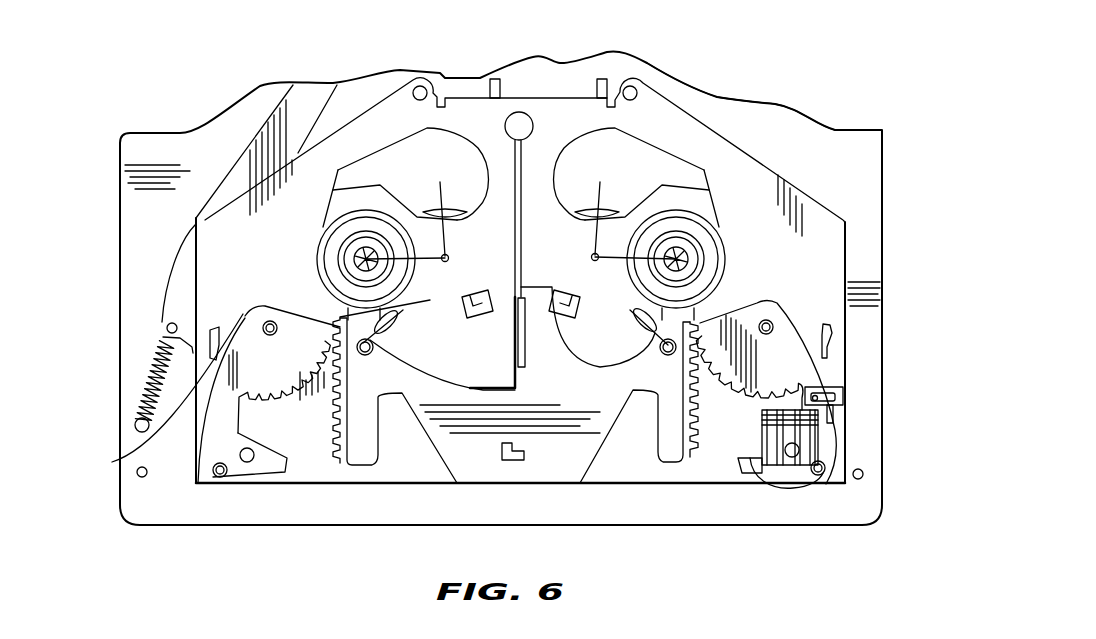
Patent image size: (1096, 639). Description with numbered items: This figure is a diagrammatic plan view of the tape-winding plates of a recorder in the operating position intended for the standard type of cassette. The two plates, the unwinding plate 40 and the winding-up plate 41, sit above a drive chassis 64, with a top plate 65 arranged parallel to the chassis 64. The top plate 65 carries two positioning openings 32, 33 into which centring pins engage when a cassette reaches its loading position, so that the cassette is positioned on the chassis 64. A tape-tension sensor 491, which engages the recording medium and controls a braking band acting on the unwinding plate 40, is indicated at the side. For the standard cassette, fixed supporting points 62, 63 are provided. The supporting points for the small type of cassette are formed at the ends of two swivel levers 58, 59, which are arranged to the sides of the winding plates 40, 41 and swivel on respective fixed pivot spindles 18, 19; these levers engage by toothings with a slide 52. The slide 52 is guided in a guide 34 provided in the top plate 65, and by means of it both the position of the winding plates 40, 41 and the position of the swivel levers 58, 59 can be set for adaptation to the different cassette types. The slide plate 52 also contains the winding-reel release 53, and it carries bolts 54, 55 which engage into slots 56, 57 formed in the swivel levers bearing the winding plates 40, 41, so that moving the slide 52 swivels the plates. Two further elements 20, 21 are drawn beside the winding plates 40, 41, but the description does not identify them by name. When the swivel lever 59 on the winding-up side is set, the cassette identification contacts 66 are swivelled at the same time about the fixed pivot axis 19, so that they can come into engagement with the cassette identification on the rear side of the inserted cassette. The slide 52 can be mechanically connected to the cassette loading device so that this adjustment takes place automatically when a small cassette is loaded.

The tape-tension sensor 491 is at (245, 163).
The unwinding plate 40 is at (359, 210).
The positioning opening 32 is at (416, 87).
The positioning opening 33 is at (628, 86).
The winding-up plate 41 is at (666, 210).
The top plate 65 is at (748, 170).
The chassis 64 is at (870, 168).
The swivel lever 58 is at (260, 307).
The pivot spindle 18 is at (264, 325).
The guide 34 is at (503, 239).
The left indicator pointer 20 is at (448, 260).
The right indicator pointer 21 is at (592, 258).
The slot 56 is at (400, 322).
The bolt 54 is at (374, 347).
The winding-reel release 53 is at (513, 373).
The slot 57 is at (636, 317).
The bolt 55 is at (660, 347).
The swivel lever 59 is at (772, 310).
The pivot spindle 19 is at (773, 322).
The fixed supporting point 63 is at (833, 355).
The fixed supporting point 62 is at (124, 460).
The slide 52 is at (597, 443).
The cassette identification contacts 66 is at (778, 448).